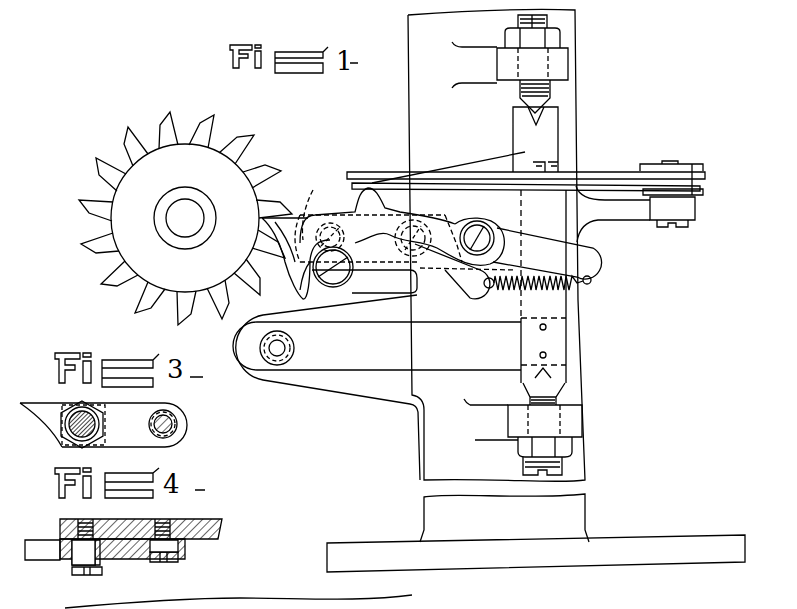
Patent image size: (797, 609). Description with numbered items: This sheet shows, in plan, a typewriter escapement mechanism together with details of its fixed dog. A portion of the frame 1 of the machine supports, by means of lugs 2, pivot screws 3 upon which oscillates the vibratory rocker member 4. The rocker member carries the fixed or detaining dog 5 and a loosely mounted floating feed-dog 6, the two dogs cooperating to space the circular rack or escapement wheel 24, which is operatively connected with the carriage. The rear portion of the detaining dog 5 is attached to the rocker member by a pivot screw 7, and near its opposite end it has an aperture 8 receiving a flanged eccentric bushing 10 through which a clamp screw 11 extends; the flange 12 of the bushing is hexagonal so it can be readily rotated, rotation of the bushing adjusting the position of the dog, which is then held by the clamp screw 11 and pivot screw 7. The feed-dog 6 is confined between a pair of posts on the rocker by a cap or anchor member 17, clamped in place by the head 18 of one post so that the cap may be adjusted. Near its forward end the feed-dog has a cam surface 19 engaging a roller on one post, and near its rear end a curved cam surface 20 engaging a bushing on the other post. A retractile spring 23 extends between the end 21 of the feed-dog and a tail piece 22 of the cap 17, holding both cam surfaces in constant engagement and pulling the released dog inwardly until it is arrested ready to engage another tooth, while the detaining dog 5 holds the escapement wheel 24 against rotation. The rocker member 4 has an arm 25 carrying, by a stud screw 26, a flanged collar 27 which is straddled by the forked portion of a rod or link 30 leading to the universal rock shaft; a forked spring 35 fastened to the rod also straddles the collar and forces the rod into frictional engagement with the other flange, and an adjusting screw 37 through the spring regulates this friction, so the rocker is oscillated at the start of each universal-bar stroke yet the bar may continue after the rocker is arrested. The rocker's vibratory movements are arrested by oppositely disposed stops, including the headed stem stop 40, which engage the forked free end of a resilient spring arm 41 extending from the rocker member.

In FIG. 1, the frame 1 is at (648, 545).
In FIG. 1, the lugs 2 is at (568, 63).
In FIG. 1, the pivot screws 3 is at (548, 22).
In FIG. 1, the vibratory rocker member 4 is at (545, 140).
In FIG. 1, the fixed or detaining dog 5 is at (296, 236).
In FIG. 3, the fixed or detaining dog 5 is at (50, 415).
In FIG. 4, the fixed or detaining dog 5 is at (40, 555).
In FIG. 1, the feed-dog 6 is at (300, 287).
In FIG. 3, the pivot screw 7 is at (168, 430).
In FIG. 4, the pivot screw 7 is at (172, 562).
In FIG. 3, the aperture 8 is at (95, 430).
In FIG. 3, the flanged eccentric bushing 10 is at (68, 432).
In FIG. 3, the clamp screw 11 is at (90, 420).
In FIG. 4, the clamp screw 11 is at (80, 575).
In FIG. 4, the flange 12 is at (105, 565).
In FIG. 1, the cap or anchor member 17 is at (368, 190).
In FIG. 1, the head 18 is at (470, 222).
In FIG. 1, the cam surface 19 is at (312, 272).
In FIG. 1, the curved cam surface 20 is at (500, 237).
In FIG. 1, the end of the feed dog 21 is at (470, 282).
In FIG. 1, the tail piece 22 is at (597, 275).
In FIG. 1, the retractile spring 23 is at (532, 290).
In FIG. 1, the escapement wheel 24 is at (185, 218).
In FIG. 1, the arm 25 is at (617, 215).
In FIG. 1, the stud screw 26 is at (680, 230).
In FIG. 1, the flanged collar 27 is at (700, 178).
In FIG. 1, the rod or link 30 is at (423, 172).
In FIG. 1, the forked spring 35 is at (602, 188).
In FIG. 1, the adjusting screw 37 is at (520, 165).
In FIG. 1, the stop or abutment 40 is at (280, 363).
In FIG. 1, the resilient spring arm 41 is at (377, 346).